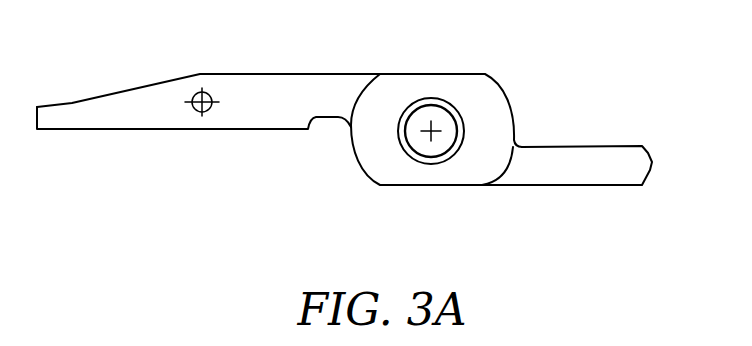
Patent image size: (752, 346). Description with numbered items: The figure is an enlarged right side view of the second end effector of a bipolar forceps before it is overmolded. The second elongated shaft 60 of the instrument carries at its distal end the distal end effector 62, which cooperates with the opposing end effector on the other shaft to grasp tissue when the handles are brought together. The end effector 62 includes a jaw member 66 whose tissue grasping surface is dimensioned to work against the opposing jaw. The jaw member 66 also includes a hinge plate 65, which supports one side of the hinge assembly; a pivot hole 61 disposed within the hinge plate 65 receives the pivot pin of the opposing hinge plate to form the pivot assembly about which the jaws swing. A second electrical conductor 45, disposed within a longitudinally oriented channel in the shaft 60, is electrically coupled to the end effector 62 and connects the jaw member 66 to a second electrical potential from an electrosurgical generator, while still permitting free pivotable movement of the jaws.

The elongated shaft 60 is at (379, 131).
The distal end effector 62 is at (356, 131).
The jaw member 66 is at (153, 97).
The hinge plate 65 is at (493, 117).
The pivot hole 61 is at (448, 107).
The second electrical conductor 45 is at (597, 173).